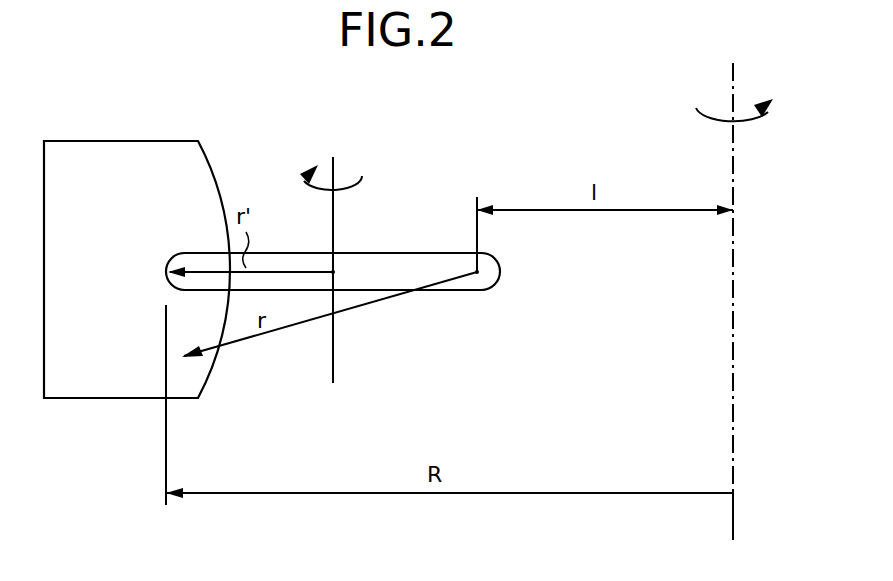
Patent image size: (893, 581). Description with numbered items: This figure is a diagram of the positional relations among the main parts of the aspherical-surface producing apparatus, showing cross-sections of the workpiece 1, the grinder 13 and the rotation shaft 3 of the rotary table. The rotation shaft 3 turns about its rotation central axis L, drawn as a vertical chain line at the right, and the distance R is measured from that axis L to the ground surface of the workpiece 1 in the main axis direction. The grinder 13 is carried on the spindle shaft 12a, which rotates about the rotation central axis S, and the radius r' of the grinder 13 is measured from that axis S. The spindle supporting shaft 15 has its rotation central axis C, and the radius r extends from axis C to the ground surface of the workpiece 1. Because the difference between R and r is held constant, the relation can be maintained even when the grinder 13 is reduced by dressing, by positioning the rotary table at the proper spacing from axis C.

The workpiece 1 is at (67, 392).
The rotation shaft 3 is at (742, 297).
The spindle shaft 12a is at (341, 247).
The grinder 13 is at (418, 251).
The bearing 15 is at (492, 214).
The rotation central axis of the spindle shaft S is at (336, 360).
The rotation central axis of the spindle supporting shaft C is at (478, 232).
The rotation central axis of the rotation shaft L is at (735, 519).